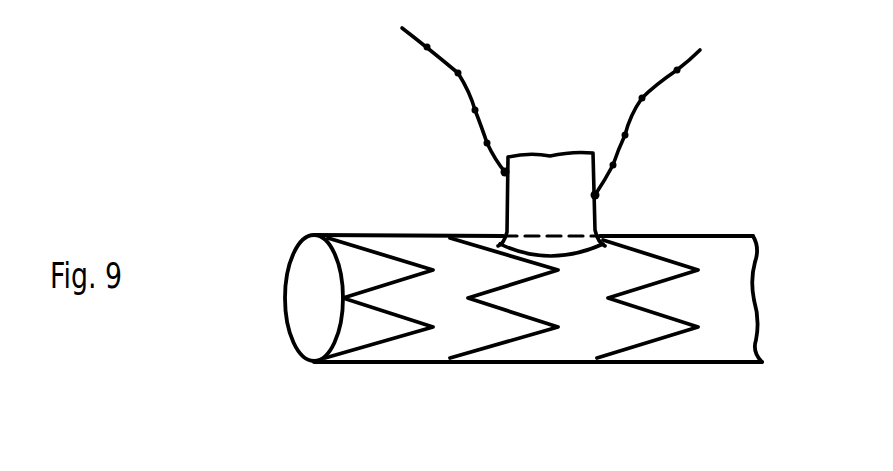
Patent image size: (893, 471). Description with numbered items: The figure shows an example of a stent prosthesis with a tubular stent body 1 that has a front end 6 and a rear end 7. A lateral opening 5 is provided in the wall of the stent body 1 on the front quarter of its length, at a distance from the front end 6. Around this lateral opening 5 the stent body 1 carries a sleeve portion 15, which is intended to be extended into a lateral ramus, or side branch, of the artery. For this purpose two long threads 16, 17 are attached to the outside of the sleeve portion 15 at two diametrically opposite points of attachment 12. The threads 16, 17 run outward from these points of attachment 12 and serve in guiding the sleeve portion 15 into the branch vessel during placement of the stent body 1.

The tubular stent body 1 is at (587, 327).
The lateral opening 5 is at (540, 232).
The front end 6 is at (332, 350).
The rear end 7 is at (708, 357).
The points of attachment 12 is at (503, 171).
The sleeve portion 15 is at (578, 218).
The long thread 16 is at (640, 108).
The long thread 17 is at (457, 82).